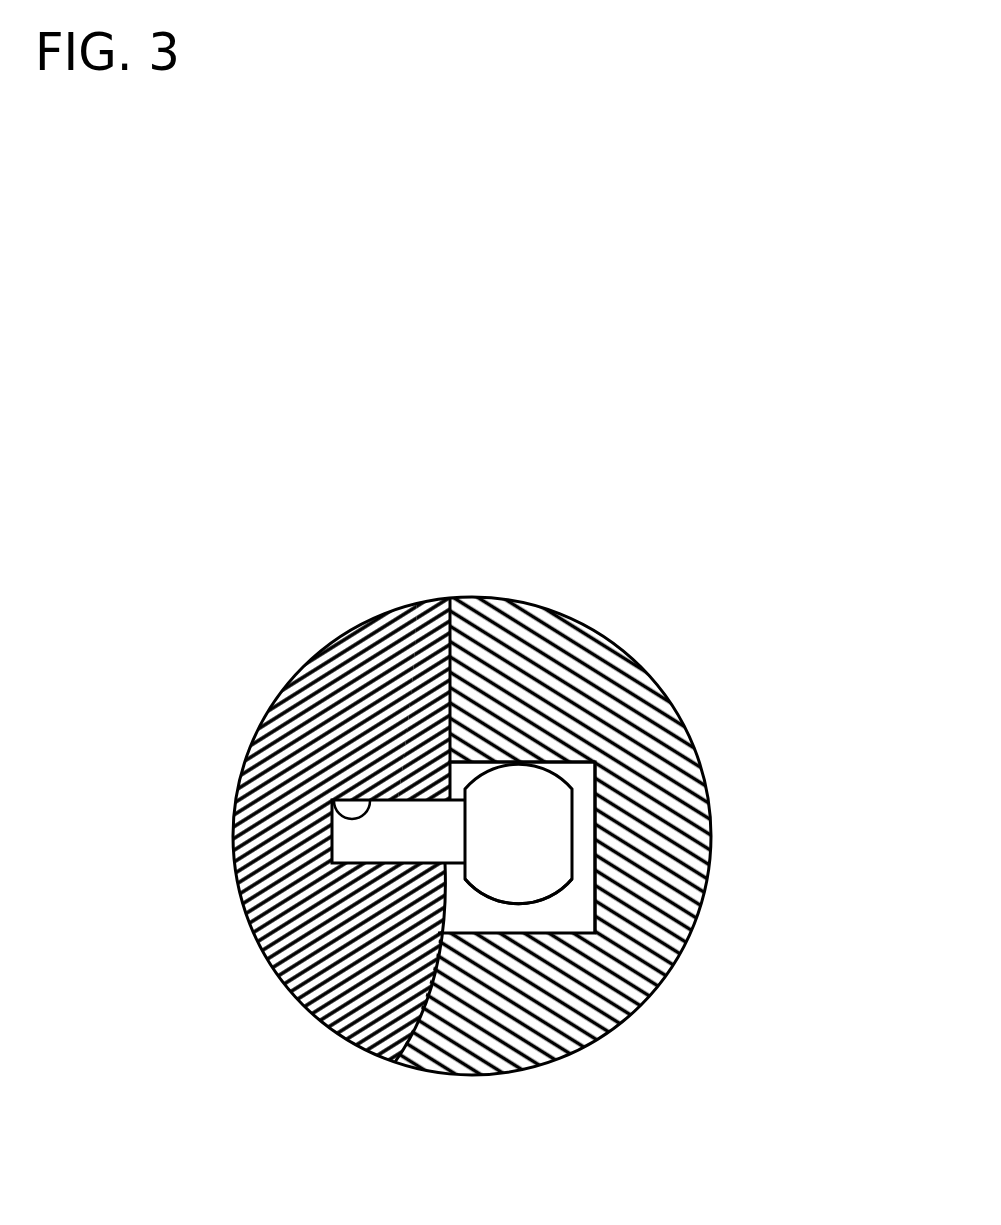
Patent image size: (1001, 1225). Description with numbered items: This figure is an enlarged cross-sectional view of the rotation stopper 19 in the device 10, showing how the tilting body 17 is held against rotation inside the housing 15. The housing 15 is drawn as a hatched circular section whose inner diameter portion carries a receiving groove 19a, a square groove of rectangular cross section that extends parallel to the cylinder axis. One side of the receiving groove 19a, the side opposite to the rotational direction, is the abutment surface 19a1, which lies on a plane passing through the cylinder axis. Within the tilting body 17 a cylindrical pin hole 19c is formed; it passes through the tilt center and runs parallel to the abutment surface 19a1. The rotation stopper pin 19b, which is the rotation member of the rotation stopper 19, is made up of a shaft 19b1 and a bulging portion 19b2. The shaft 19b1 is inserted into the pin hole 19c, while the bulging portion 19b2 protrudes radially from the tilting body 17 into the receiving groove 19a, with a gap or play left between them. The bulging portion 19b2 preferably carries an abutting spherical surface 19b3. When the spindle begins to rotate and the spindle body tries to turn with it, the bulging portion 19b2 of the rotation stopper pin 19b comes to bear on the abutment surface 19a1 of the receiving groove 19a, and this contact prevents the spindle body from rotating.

The device 10 is at (925, 393).
The housing 15 is at (648, 670).
The tilting body 17 is at (443, 933).
The rotation stopper 19 is at (638, 620).
The receiving groove 19a is at (585, 877).
The abutment surface 19a1 is at (596, 803).
The rotation stopper pin 19b is at (593, 470).
The shaft 19b1 is at (398, 800).
The bulging portion 19b2 is at (583, 770).
The abutting spherical surface 19b3 is at (536, 905).
The pin hole 19c is at (333, 805).